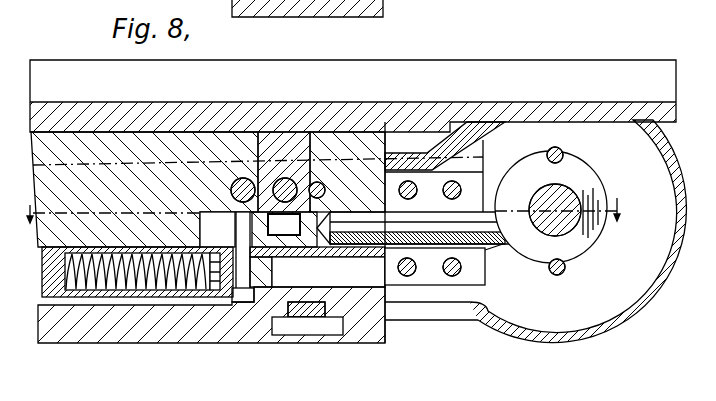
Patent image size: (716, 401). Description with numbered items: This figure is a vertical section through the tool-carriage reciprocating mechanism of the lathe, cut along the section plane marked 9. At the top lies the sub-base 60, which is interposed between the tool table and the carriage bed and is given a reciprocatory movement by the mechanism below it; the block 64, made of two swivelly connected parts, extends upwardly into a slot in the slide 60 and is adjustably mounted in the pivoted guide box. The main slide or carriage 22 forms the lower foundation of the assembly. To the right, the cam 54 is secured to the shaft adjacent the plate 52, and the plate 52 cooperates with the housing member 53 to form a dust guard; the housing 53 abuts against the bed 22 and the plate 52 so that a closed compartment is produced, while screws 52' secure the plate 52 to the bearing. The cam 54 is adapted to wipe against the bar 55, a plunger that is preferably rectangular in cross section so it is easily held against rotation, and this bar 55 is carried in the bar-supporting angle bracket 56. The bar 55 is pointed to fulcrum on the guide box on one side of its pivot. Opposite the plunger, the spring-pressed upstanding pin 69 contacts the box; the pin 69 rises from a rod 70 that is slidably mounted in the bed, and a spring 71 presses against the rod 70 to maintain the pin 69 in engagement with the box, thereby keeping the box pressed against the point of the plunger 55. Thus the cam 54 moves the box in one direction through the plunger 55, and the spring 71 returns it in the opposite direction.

The section line 9- 9 is at (322, 192).
The main slide or carriage 22 is at (385, 338).
The plate 52 is at (457, 305).
The screws 52' is at (584, 273).
The housing member 53 is at (666, 246).
The cam 54 is at (583, 165).
The bar 55 is at (492, 246).
The bar-supporting angle bracket 56 is at (487, 170).
The sub-base 60 is at (33, 172).
The block 64 is at (299, 112).
The spring-pressed upstanding pin 69 is at (236, 233).
The rod 70 is at (328, 272).
The spring 71 is at (62, 273).